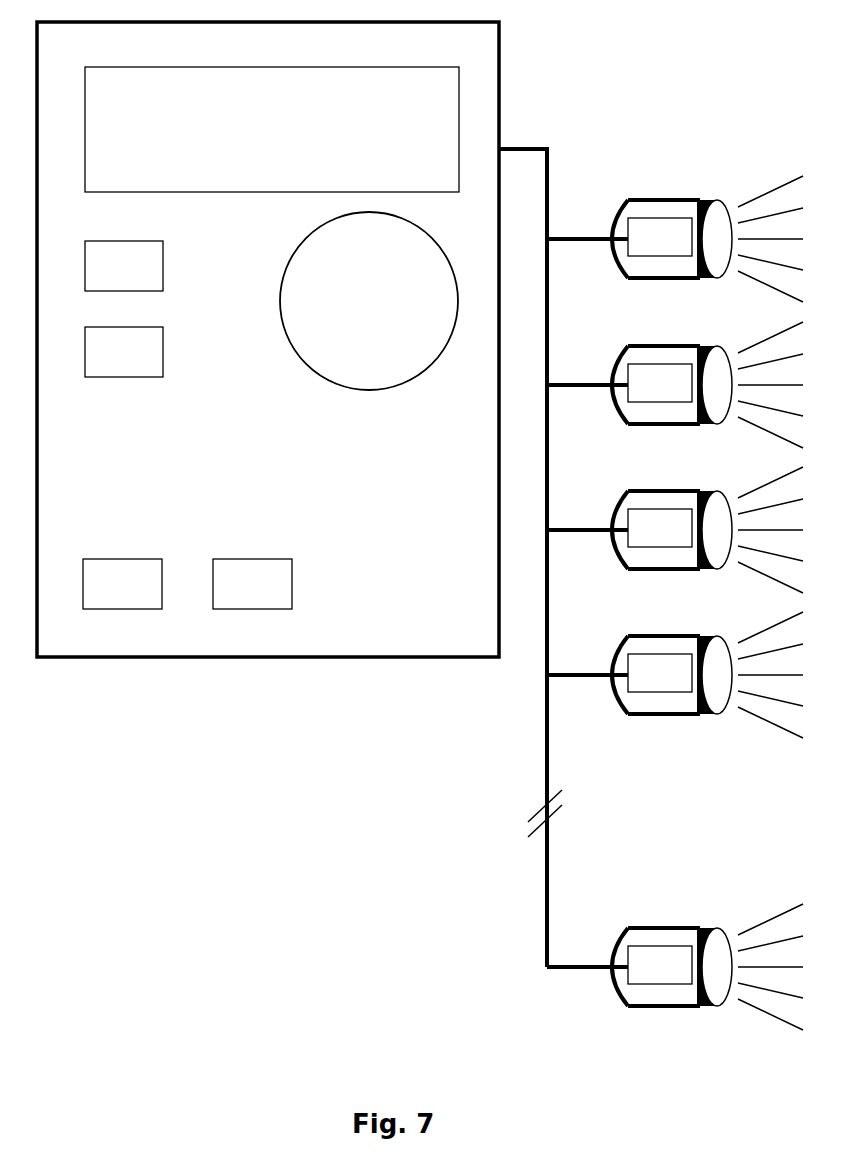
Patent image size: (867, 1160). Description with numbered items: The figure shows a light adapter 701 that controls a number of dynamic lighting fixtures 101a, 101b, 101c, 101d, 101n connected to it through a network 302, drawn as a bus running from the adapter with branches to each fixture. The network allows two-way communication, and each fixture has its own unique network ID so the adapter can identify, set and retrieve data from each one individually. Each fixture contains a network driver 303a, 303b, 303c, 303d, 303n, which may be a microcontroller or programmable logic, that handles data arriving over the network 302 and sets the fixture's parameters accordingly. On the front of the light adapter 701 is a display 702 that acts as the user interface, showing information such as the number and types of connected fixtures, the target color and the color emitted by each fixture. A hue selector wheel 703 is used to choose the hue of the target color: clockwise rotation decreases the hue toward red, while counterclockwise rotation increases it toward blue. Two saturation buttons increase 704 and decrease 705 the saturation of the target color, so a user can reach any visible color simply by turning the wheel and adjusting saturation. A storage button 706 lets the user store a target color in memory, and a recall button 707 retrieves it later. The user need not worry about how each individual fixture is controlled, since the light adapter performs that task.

The light adapter 701 is at (317, 688).
The display 702 is at (272, 129).
The hue selector wheel 703 is at (369, 301).
The saturation increasing button 704 is at (124, 266).
The saturation decreasing button 705 is at (124, 352).
The storage button 706 is at (122, 584).
The recall button 707 is at (252, 584).
The network 302 is at (548, 735).
The lighting fixture 101a is at (675, 239).
The lighting fixture 101b is at (675, 385).
The lighting fixture 101c is at (675, 530).
The lighting fixture 101d is at (675, 675).
The lighting fixture 101n is at (675, 967).
The network driver 303a is at (660, 237).
The network driver 303b is at (660, 383).
The network driver 303c is at (660, 528).
The network driver 303d is at (660, 673).
The network driver 303n is at (660, 965).